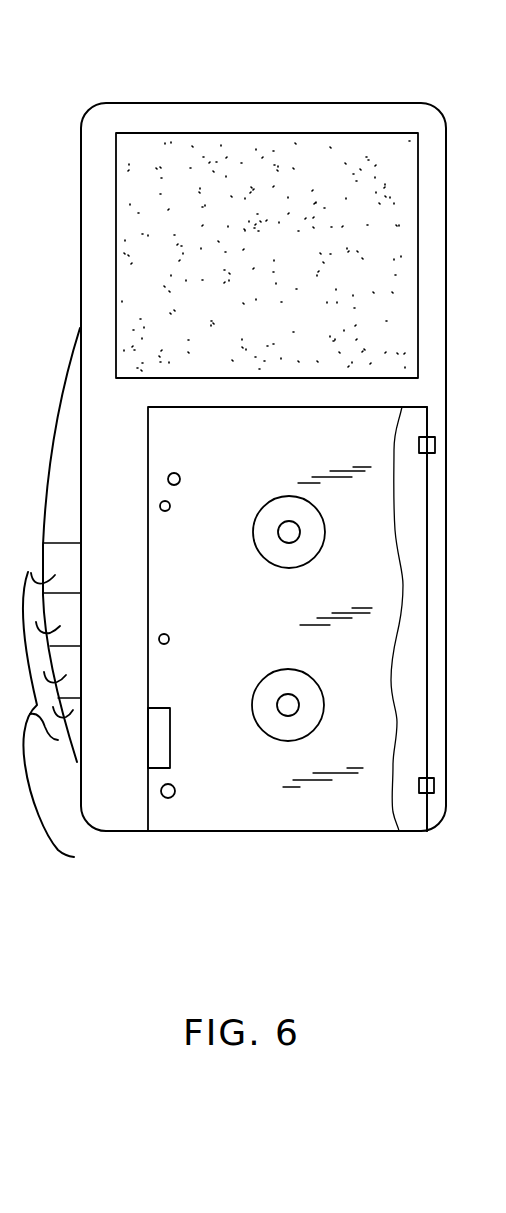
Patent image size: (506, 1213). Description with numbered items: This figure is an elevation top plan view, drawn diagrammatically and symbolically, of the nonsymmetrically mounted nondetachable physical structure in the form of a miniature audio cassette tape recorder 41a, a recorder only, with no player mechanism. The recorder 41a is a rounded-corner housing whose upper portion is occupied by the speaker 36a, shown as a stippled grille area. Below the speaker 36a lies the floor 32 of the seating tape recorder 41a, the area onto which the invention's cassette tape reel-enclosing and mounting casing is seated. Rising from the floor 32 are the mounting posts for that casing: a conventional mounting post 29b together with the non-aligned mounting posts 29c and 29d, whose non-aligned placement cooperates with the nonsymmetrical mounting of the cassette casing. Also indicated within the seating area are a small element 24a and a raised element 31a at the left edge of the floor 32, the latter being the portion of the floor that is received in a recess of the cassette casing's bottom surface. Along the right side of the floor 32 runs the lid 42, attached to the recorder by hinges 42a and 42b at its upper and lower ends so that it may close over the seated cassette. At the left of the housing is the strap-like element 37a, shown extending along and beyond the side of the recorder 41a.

The tape recorder 41a is at (235, 84).
The speaker 36a is at (318, 160).
The floor 32 is at (300, 807).
The lid 42 is at (411, 505).
The hinge 42a is at (430, 437).
The lower fastener 42b is at (424, 793).
The indicator light 24a is at (179, 474).
The non aligned mounting post 29c is at (170, 503).
The non aligned mounting post 29d is at (169, 636).
The conventional mounting post 29b is at (175, 790).
The switch 31a is at (170, 737).
The strap 37a is at (80, 603).